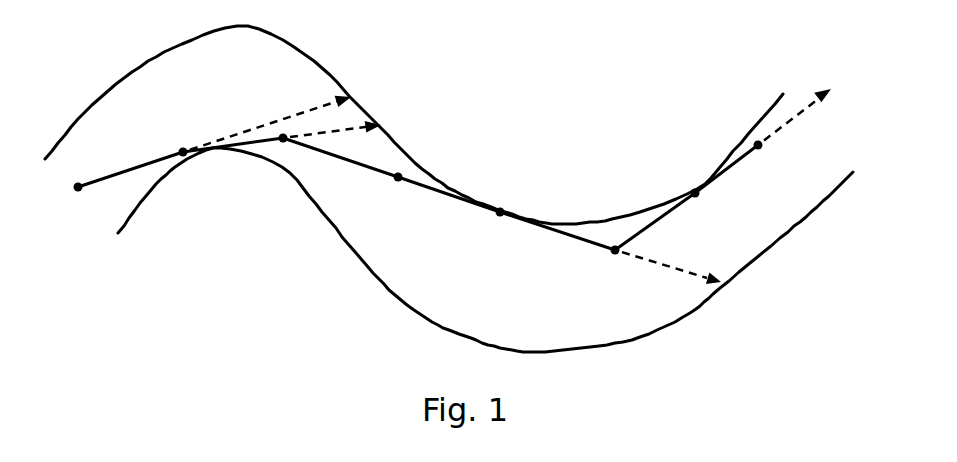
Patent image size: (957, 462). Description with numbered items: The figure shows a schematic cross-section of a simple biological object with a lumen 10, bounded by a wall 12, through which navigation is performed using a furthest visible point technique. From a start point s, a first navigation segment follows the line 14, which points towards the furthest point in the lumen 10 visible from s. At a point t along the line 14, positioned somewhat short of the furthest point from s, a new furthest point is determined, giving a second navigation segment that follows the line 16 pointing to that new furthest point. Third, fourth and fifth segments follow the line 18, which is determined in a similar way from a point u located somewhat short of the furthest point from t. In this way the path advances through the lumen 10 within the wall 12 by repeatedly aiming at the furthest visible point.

The lumen 10 is at (127, 93).
The wall 12 is at (392, 293).
The line 14 is at (147, 162).
The line 16 is at (260, 138).
The line 18 is at (650, 263).